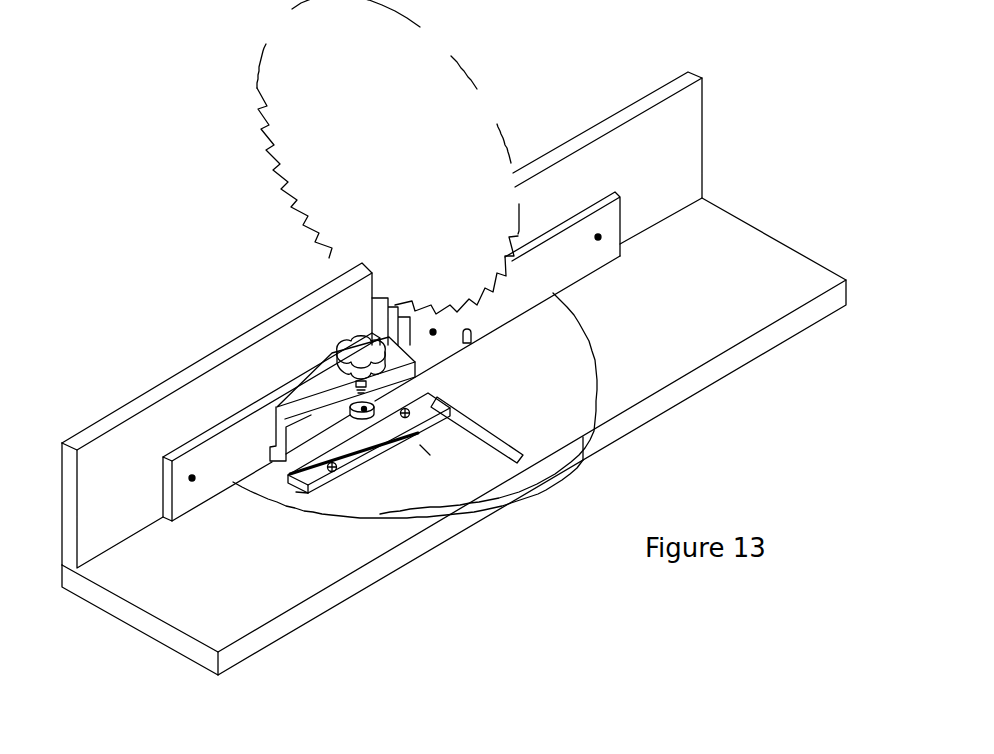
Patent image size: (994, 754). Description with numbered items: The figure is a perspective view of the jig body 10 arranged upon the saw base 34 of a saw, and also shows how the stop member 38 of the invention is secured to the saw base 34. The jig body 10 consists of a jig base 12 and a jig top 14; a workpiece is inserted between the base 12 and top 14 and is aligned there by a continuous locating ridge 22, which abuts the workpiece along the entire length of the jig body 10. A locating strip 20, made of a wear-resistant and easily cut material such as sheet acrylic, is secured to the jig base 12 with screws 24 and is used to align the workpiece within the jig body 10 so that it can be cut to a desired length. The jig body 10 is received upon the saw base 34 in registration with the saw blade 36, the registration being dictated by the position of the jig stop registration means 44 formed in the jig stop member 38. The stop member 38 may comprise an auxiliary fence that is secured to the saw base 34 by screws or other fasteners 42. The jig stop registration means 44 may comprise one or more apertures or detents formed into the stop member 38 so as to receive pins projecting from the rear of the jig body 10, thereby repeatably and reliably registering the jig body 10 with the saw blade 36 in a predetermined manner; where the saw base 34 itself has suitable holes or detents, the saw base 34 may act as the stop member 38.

The jig body 10 is at (425, 444).
The jig base 12 is at (375, 625).
The jig top 14 is at (435, 397).
The locating strip 20 is at (437, 416).
The locating ridge 22 is at (296, 492).
The screws 24 is at (414, 425).
The saw base 34 is at (810, 218).
The saw blade 36 is at (483, 150).
The jig stop member 38 is at (175, 485).
The fasteners 42 is at (431, 331).
The jig stop registration means 44 is at (470, 338).